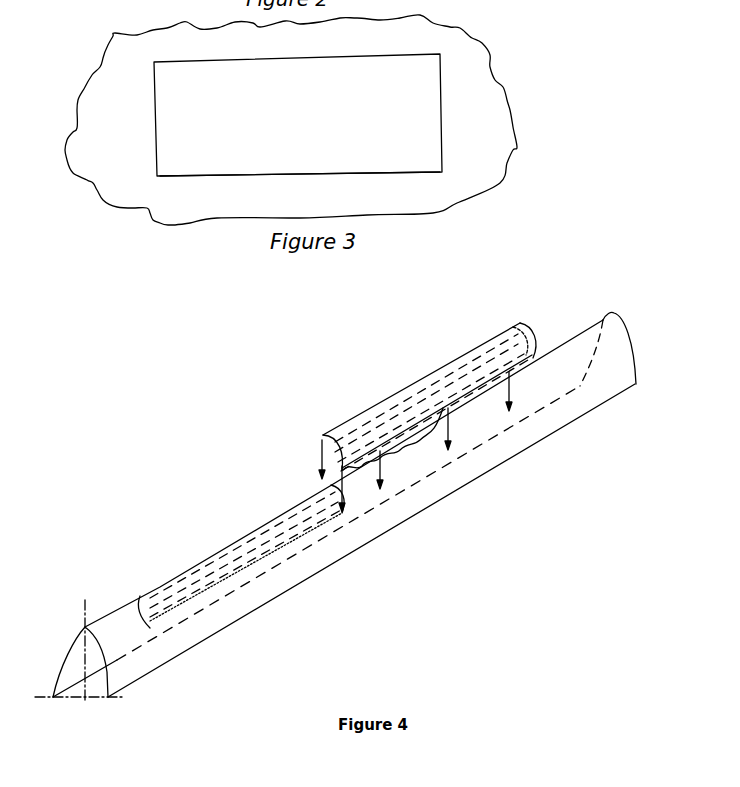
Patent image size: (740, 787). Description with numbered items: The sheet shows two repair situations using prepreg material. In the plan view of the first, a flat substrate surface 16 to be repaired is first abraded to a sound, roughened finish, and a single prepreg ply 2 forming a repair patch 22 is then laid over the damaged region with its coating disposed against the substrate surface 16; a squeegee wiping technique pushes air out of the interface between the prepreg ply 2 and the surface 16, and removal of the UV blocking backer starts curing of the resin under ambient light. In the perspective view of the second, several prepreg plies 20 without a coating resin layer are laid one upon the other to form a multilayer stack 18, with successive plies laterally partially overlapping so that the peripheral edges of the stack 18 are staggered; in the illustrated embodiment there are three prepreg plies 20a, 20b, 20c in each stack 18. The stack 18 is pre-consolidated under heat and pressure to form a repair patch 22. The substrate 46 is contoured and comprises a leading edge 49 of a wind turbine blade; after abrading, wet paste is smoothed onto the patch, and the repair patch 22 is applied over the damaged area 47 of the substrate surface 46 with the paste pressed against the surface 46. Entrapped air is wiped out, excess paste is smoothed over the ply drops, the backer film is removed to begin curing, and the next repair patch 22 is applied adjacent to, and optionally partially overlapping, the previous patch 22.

In FIG. 3, the prepreg ply 2 is at (410, 68).
In FIG. 3, the substrate surface 16 is at (473, 90).
In FIG. 3, the repair patch 22 is at (195, 176).
In FIG. 4, the repair patch 22 is at (232, 542).
In FIG. 4, the multilayer stack 18 is at (158, 585).
In FIG. 4, the prepreg plies 20 is at (578, 338).
In FIG. 4, the first prepreg ply 20a is at (204, 573).
In FIG. 4, the second prepreg ply 20b is at (222, 574).
In FIG. 4, the third prepreg ply 20c is at (240, 569).
In FIG. 4, the substrate surface 46 is at (177, 640).
In FIG. 4, the damaged area 47 is at (393, 445).
In FIG. 4, the leading edge 49 is at (513, 304).